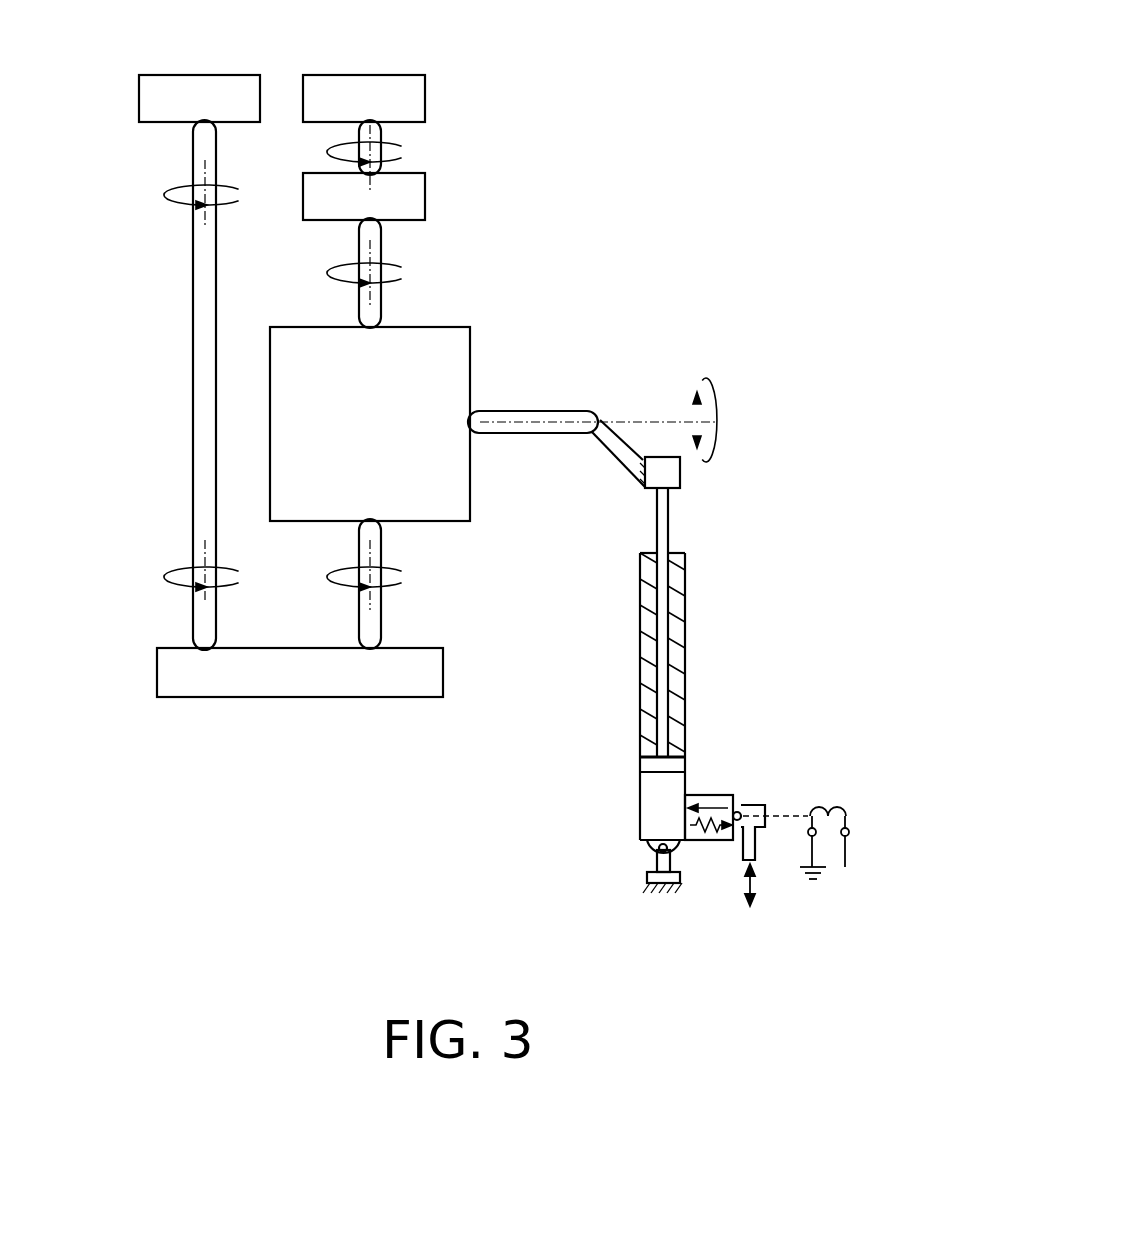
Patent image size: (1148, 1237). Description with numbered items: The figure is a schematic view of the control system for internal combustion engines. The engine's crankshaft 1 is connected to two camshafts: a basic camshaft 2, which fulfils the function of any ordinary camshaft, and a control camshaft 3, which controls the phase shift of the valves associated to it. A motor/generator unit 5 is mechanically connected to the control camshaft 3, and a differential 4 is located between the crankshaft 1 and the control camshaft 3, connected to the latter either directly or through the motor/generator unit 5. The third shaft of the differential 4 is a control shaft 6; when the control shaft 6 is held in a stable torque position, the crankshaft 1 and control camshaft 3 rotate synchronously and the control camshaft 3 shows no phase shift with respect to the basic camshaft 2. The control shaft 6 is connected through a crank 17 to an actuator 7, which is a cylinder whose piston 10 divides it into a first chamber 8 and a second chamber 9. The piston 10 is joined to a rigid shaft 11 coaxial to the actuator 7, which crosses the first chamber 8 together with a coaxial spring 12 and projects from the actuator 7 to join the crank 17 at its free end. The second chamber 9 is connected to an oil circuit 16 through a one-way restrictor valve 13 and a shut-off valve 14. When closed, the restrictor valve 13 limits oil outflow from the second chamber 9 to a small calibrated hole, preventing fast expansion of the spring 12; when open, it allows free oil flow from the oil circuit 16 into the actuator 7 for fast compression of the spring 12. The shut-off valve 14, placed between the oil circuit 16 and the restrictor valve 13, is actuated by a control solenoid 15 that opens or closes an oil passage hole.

The crankshaft 1 is at (197, 697).
The basic camshaft 2 is at (168, 73).
The control camshaft 3 is at (395, 73).
The differential 4 is at (428, 325).
The motor/generator unit 5 is at (425, 200).
The control shaft 6 is at (532, 410).
The actuator 7 is at (685, 617).
The first actuator chamber 8 is at (677, 662).
The second actuator chamber 9 is at (650, 808).
The piston 10 is at (650, 765).
The rigid shaft 11 is at (670, 512).
The spring 12 is at (647, 610).
The one-way restrictor valve 13 is at (720, 797).
The shut-off valve 14 is at (762, 812).
The control solenoid 15 is at (837, 807).
The oil circuit 16 is at (753, 858).
The crank 17 is at (618, 450).